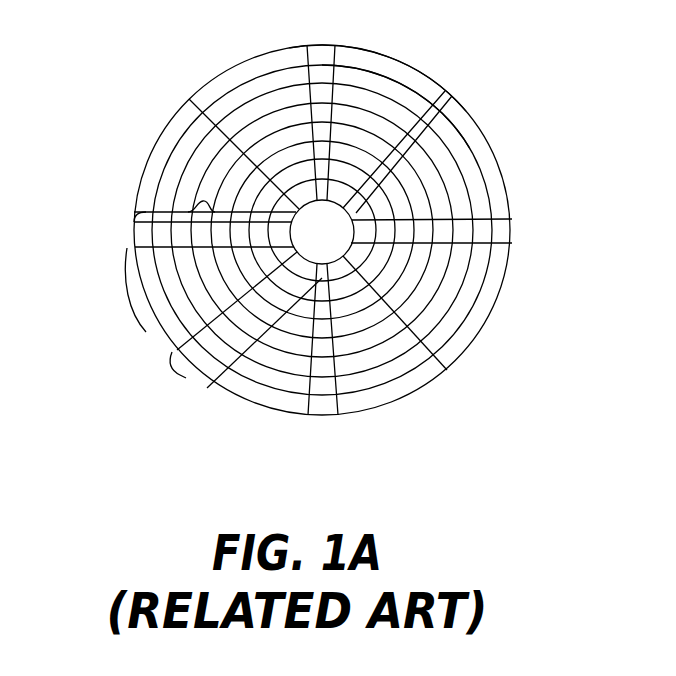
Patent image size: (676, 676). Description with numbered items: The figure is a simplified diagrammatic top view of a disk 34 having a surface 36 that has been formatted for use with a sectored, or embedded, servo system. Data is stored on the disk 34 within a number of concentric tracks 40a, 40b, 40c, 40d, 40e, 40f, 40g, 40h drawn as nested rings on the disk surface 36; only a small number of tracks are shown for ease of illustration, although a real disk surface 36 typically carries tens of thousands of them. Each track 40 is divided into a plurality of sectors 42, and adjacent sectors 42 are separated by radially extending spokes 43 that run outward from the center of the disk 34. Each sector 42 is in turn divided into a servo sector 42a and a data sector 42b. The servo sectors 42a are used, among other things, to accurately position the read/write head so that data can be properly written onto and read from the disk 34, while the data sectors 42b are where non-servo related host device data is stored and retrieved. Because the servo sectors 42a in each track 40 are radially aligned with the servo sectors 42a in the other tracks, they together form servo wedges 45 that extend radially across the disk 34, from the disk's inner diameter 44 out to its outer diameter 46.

The disk 34 is at (237, 68).
The surface 36 is at (167, 145).
The track 40 is at (353, 236).
The track 40a is at (366, 57).
The track 40b is at (392, 88).
The track 40c is at (392, 108).
The track 40d is at (392, 130).
The track 40e is at (344, 258).
The track 40f is at (383, 320).
The track 40g is at (365, 302).
The track 40h is at (345, 288).
The sector 42 is at (307, 233).
The servo sector 42a is at (185, 373).
The data sector 42b is at (128, 318).
The spoke 43 is at (483, 217).
The inner diameter 44 is at (297, 248).
The servo wedge 45 is at (202, 201).
The outer diameter 46 is at (240, 394).